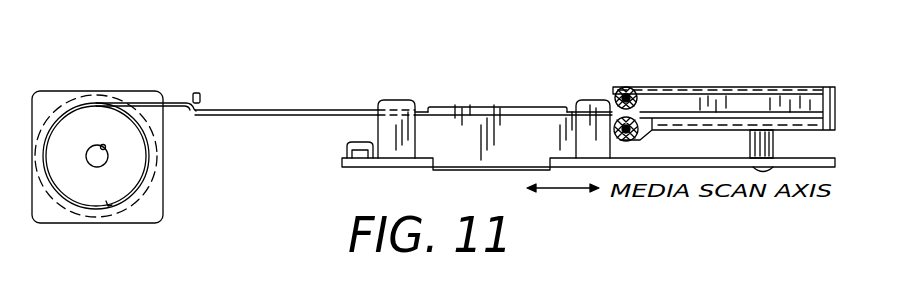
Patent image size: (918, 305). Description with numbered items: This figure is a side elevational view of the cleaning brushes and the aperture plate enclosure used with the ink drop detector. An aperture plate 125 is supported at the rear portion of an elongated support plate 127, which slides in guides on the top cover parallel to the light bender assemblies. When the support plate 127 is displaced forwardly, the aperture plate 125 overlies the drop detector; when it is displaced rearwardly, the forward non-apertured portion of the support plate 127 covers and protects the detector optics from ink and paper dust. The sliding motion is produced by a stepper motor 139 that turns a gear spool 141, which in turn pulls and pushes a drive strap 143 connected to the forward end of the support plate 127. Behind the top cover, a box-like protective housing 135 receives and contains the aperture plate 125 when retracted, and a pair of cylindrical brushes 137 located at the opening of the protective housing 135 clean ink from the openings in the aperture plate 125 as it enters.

The aperture plate 125 is at (555, 106).
The support plate 127 is at (283, 110).
The protective housing 135 is at (793, 86).
The cylindrical brushes 137 is at (623, 87).
The stepper motor 139 is at (153, 210).
The gear spool 141 is at (78, 193).
The drive strap 143 is at (183, 107).